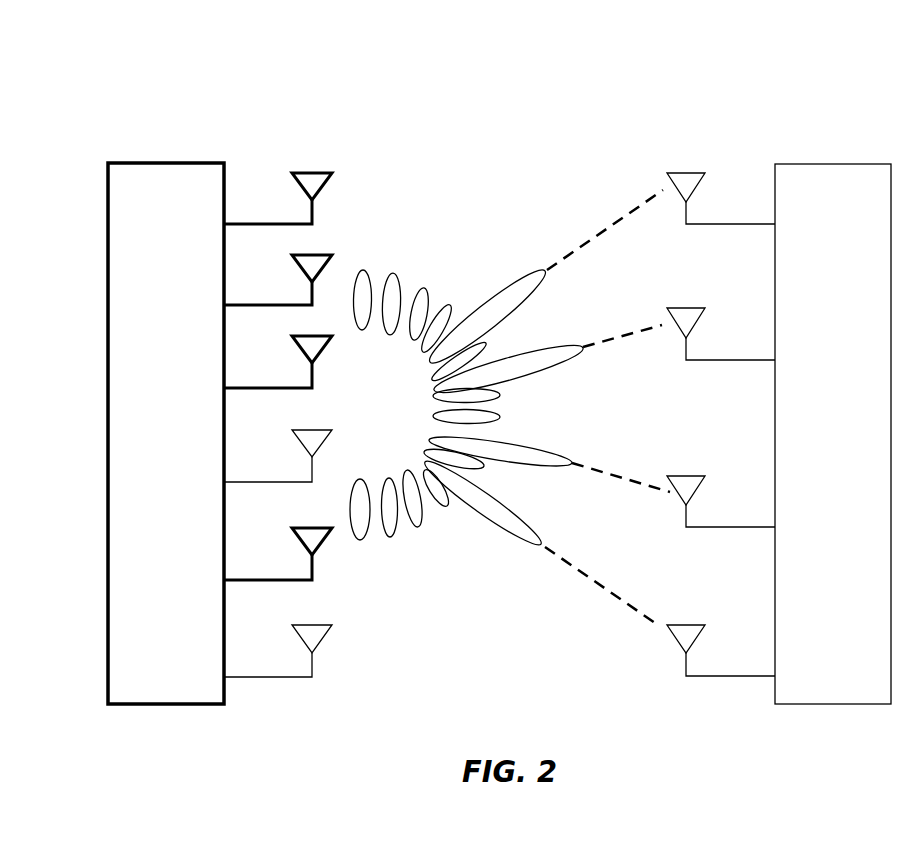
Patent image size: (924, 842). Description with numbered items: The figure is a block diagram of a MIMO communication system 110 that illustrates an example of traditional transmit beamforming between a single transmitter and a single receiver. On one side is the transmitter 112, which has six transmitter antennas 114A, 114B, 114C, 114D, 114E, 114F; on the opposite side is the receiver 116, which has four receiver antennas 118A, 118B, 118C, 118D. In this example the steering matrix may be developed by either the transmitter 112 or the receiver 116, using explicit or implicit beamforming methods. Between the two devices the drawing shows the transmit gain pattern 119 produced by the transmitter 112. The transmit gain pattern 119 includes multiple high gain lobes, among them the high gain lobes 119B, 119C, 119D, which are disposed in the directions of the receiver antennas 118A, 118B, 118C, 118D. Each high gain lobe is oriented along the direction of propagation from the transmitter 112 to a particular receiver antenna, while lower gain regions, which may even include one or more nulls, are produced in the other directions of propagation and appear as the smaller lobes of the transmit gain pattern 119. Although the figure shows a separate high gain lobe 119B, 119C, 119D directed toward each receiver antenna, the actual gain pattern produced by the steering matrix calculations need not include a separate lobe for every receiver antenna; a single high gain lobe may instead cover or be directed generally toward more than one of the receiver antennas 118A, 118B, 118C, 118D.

The MIMO communication system 110 is at (569, 87).
The transmitter 112 is at (161, 163).
The transmitter antenna 114A is at (293, 175).
The transmitter antenna 114B is at (293, 257).
The transmitter antenna 114C is at (293, 339).
The transmitter antenna 114D is at (293, 433).
The transmitter antenna 114E is at (293, 531).
The transmitter antenna 114F is at (293, 627).
The receiver 116 is at (835, 164).
The receiver antenna 118A is at (705, 177).
The receiver antenna 118B is at (705, 312).
The receiver antenna 118C is at (705, 479).
The receiver antenna 118D is at (705, 628).
The transmit gain pattern 119 is at (378, 272).
The high gain lobe 119B is at (512, 284).
The high gain lobe 119C is at (538, 444).
The high gain lobe 119D is at (531, 527).